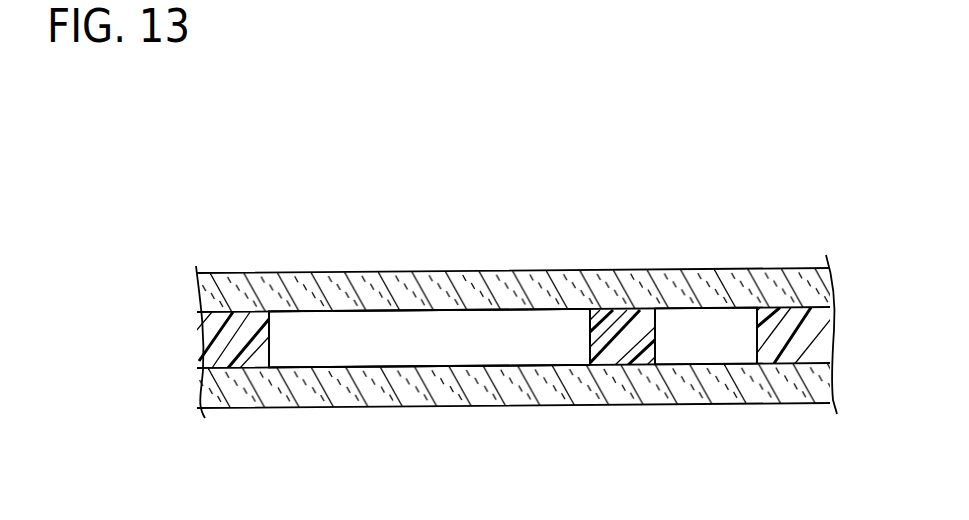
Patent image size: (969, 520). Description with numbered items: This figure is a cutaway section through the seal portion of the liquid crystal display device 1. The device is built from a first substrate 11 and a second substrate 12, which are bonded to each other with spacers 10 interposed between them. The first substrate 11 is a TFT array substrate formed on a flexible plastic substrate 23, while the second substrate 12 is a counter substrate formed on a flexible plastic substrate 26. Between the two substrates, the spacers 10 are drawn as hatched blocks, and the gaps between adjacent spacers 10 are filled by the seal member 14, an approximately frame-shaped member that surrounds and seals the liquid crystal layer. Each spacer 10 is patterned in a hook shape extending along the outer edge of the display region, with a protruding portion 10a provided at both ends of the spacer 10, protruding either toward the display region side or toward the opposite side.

The liquid crystal display device 1 is at (163, 195).
The spacer 10 is at (387, 325).
The protruding portion 10a is at (541, 323).
The first substrate 11 is at (233, 408).
The second substrate 12 is at (262, 274).
The seal member 14 is at (255, 357).
The flexible plastic substrate 23 is at (740, 383).
The flexible plastic substrate 26 is at (800, 277).